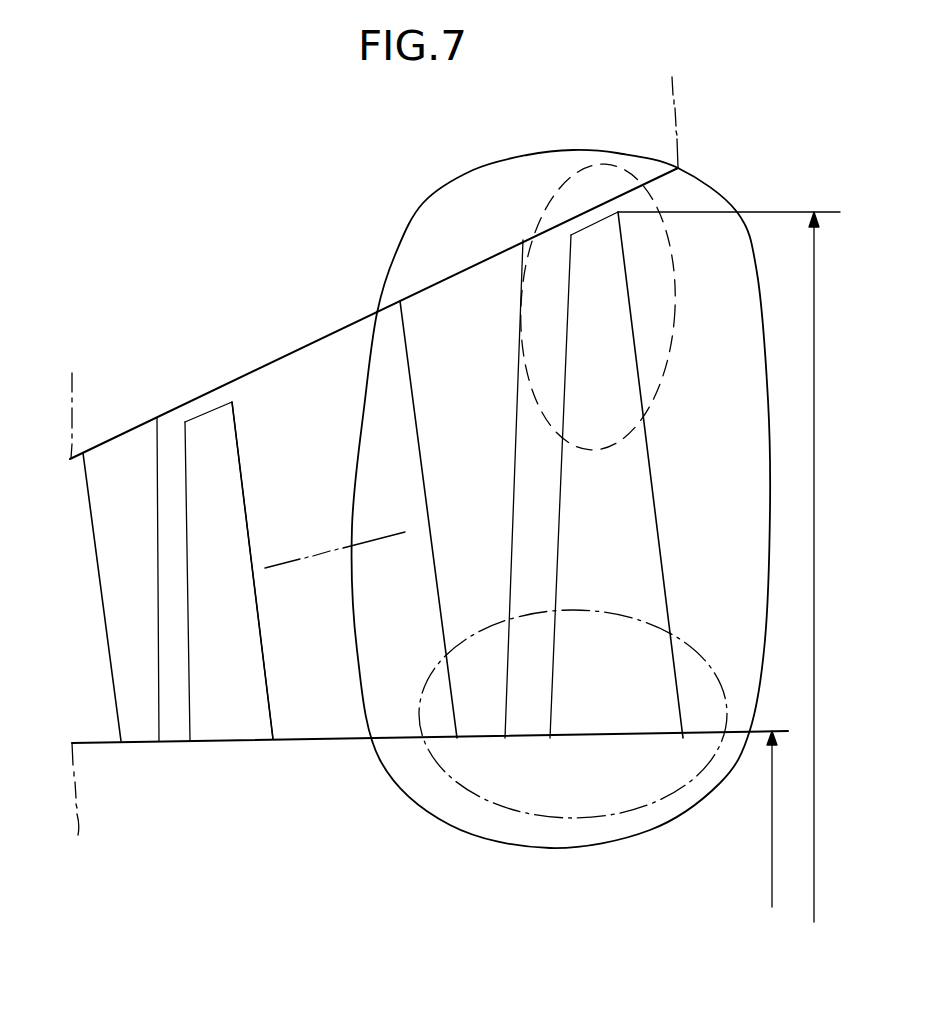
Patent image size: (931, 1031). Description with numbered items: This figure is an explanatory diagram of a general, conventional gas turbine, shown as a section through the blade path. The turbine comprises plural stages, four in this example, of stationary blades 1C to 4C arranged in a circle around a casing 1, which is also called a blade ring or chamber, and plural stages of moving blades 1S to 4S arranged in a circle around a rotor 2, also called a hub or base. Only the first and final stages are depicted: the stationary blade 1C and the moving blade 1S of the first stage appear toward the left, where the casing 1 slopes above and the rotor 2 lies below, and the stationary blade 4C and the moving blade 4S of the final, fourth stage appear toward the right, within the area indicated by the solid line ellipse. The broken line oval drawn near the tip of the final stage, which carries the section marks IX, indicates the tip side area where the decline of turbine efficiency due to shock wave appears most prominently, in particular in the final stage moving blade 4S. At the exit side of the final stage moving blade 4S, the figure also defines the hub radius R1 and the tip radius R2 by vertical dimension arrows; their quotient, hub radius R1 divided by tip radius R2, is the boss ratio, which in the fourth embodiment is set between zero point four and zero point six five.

The casing 1 is at (362, 409).
The rotor 2 is at (259, 840).
The stationary blade of the first stage 1C is at (122, 610).
The moving blade of the first stage 1S is at (228, 515).
The stationary blade of the final stage 4C is at (455, 570).
The final stage moving blade 4S is at (648, 557).
The hub radius R1 is at (772, 866).
The tip radius R2 is at (814, 910).
The section line IX is at (537, 338).